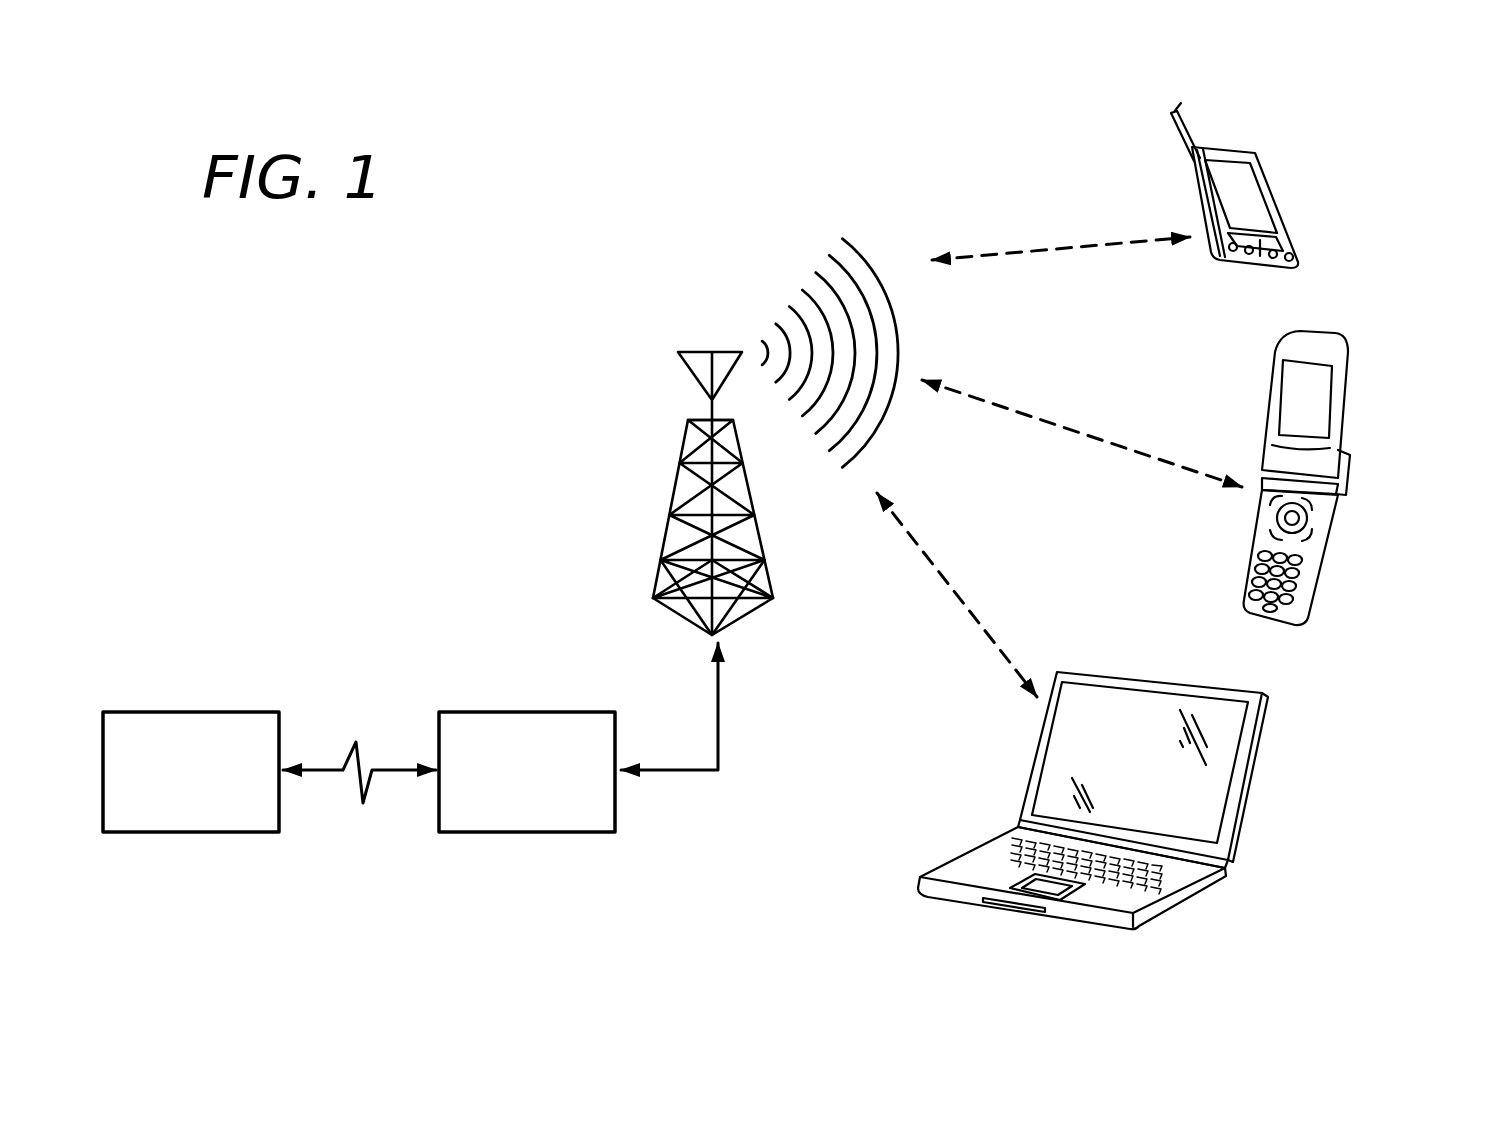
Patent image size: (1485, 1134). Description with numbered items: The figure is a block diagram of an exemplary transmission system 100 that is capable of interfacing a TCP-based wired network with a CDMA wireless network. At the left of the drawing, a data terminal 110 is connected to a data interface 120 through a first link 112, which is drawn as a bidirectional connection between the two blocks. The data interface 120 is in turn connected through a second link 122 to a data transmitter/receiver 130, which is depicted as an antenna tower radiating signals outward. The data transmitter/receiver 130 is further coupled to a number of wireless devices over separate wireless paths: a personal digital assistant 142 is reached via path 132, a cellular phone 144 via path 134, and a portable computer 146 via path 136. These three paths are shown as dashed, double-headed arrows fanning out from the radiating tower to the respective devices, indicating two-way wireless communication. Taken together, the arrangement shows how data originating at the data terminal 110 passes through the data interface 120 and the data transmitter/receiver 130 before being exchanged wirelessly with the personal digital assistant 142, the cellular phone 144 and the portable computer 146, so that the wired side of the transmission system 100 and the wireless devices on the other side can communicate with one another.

The transmission system 100 is at (430, 385).
The data terminal 110 is at (193, 712).
The first link 112 is at (390, 773).
The data interface 120 is at (516, 712).
The second link 122 is at (681, 773).
The data transmitter/receiver 130 is at (668, 521).
The path 132 is at (1049, 250).
The path 134 is at (1075, 427).
The path 136 is at (948, 581).
The personal digital assistant 142 is at (1278, 190).
The cellular phone 144 is at (1340, 415).
The portable computer 146 is at (1238, 775).